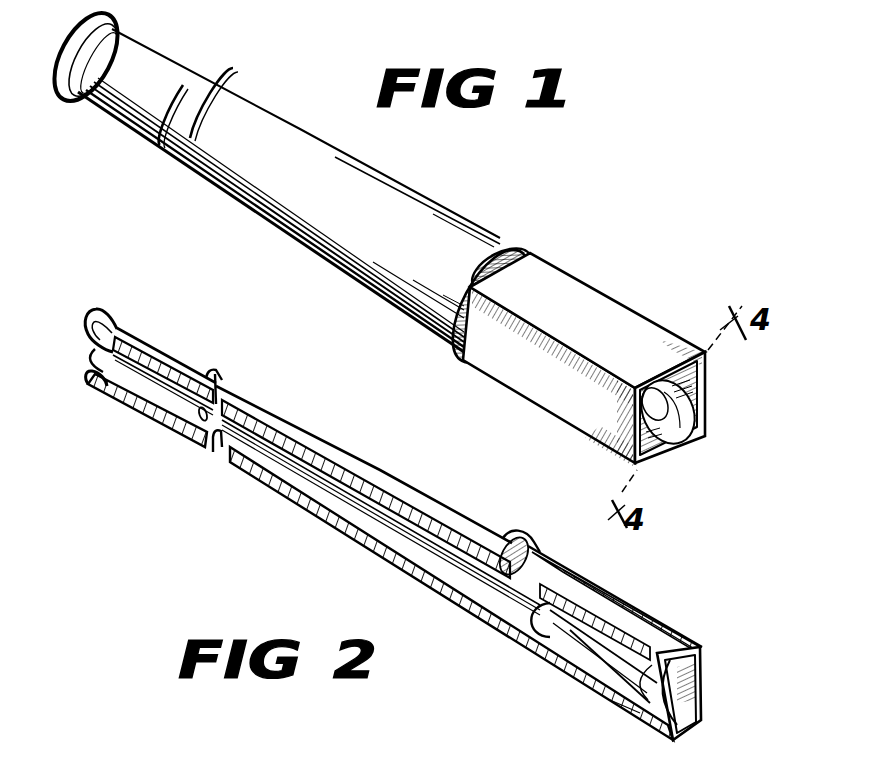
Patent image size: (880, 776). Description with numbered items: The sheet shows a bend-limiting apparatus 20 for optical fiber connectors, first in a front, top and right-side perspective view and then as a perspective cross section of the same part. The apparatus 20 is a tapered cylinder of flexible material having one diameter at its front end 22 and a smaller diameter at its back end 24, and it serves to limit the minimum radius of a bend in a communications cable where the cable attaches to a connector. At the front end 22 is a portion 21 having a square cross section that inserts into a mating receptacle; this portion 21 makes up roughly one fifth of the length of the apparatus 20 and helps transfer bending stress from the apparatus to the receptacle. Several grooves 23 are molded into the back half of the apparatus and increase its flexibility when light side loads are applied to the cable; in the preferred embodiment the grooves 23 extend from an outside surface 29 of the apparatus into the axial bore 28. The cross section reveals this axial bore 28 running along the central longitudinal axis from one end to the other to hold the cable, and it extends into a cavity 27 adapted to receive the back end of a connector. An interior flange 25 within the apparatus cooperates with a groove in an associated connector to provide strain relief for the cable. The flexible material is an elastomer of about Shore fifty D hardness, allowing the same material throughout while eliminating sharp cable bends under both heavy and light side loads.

In FIG. 1, the bend-limiting apparatus 20 is at (390, 246).
In FIG. 2, the bend-limiting apparatus 20 is at (426, 541).
In FIG. 1, the portion having a square cross section 21 is at (602, 310).
In FIG. 1, the front end 22 is at (494, 246).
In FIG. 1, the grooves 23 is at (203, 78).
In FIG. 1, the back end 24 is at (121, 54).
In FIG. 1, the interior flange 25 is at (683, 412).
In FIG. 2, the interior flange 25 is at (641, 703).
In FIG. 2, the cavity 27 is at (688, 715).
In FIG. 2, the axial bore 28 is at (337, 510).
In FIG. 1, the outside surface 29 is at (356, 181).
In FIG. 2, the outside surface 29 is at (416, 489).